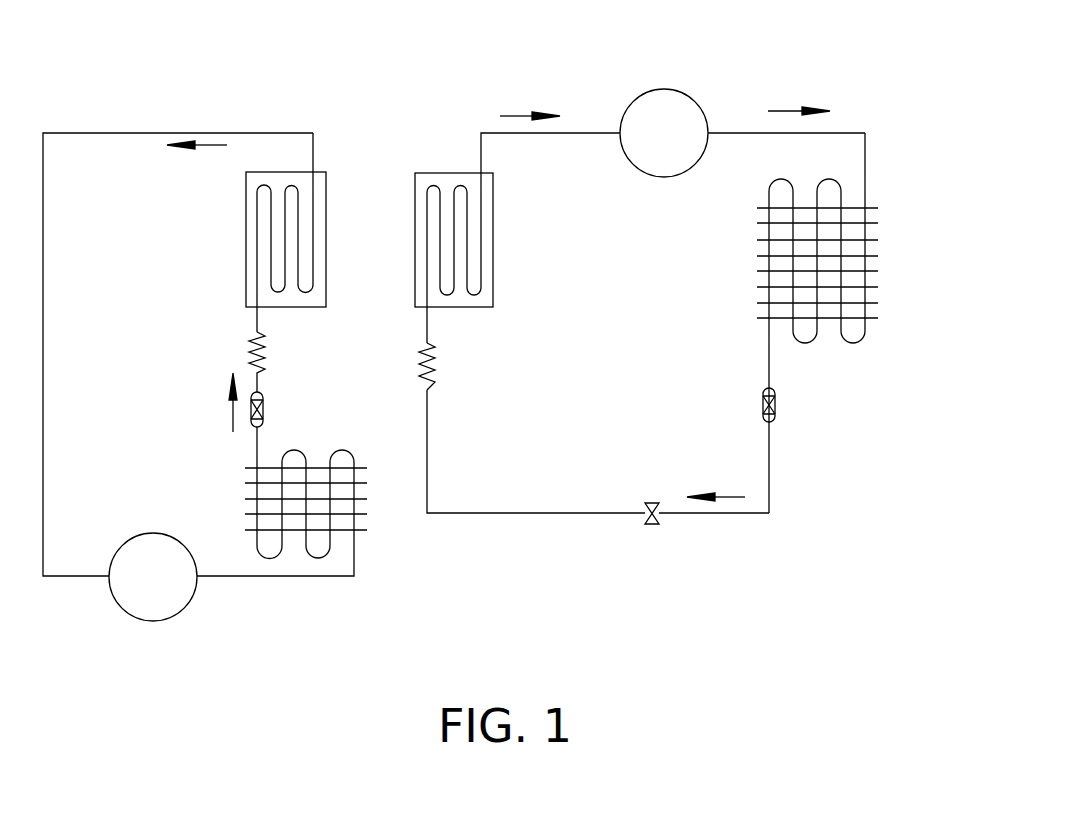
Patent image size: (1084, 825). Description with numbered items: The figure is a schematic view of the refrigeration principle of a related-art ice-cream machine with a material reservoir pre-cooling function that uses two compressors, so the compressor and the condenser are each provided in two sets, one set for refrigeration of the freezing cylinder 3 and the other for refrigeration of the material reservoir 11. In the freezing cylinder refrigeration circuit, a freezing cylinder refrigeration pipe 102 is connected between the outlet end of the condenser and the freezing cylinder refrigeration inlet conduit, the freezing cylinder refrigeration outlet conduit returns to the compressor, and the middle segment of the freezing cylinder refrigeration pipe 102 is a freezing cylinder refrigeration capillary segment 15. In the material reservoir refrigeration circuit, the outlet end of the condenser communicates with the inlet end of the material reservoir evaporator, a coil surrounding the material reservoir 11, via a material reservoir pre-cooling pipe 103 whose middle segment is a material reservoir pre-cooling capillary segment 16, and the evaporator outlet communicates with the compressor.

The freezing cylinder 3 is at (493, 245).
The material reservoir 11 is at (246, 260).
The freezing cylinder refrigeration capillary segment 15 is at (433, 368).
The material reservoir pre-cooling capillary segment 16 is at (250, 347).
The freezing cylinder refrigeration pipe 102 is at (612, 513).
The material reservoir pre-cooling pipe 103 is at (258, 451).